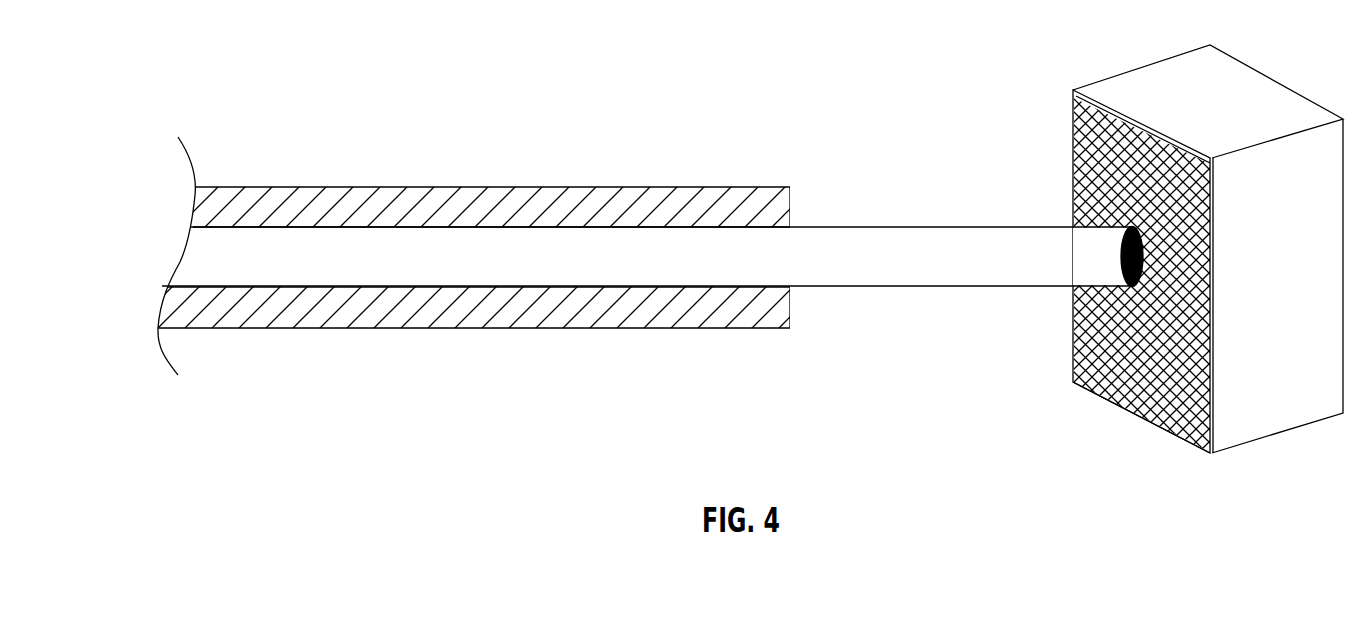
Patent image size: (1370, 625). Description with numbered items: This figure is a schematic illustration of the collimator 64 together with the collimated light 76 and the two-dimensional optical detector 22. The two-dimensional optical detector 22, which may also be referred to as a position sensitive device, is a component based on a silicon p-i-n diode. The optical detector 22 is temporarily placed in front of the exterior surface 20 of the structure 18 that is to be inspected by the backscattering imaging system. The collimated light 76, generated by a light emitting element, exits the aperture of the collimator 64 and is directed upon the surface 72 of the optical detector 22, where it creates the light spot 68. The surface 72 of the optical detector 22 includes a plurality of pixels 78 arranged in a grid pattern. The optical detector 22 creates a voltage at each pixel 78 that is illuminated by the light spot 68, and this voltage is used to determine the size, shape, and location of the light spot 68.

The structure 18 is at (1295, 113).
The exterior surface 20 is at (1093, 99).
The two-dimensional optical detector 22 is at (1216, 262).
The collimator 64 is at (450, 182).
The light spot 68 is at (1148, 258).
The surface 72 is at (1190, 203).
The collimated light 76 is at (927, 224).
The pixels 78 is at (1178, 402).